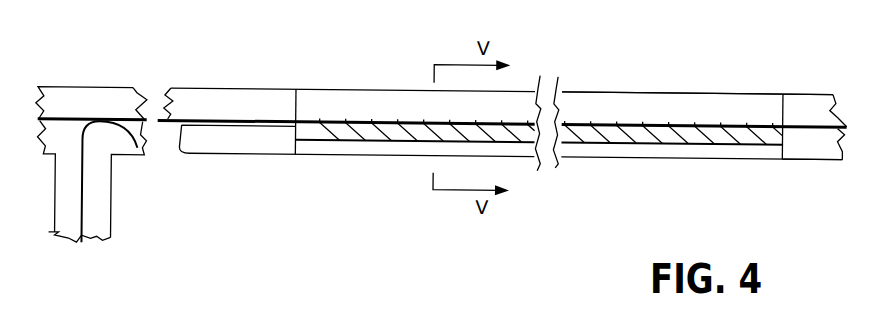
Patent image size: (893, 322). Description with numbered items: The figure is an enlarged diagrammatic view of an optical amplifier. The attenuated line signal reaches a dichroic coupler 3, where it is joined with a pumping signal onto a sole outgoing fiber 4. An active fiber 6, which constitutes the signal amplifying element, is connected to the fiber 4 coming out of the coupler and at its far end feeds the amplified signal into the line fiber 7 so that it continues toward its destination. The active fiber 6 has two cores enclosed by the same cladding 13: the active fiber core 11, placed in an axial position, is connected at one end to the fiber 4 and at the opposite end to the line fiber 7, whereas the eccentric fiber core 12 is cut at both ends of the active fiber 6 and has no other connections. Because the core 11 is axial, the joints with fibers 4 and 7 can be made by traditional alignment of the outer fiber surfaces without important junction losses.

The dichroic coupler 3 is at (88, 80).
The outgoing fiber 4 is at (247, 103).
The active fiber core 11 is at (347, 120).
The fiber core 12 is at (400, 140).
The active fiber 6 is at (624, 80).
The cladding 13 is at (717, 108).
The line fiber 7 is at (818, 148).